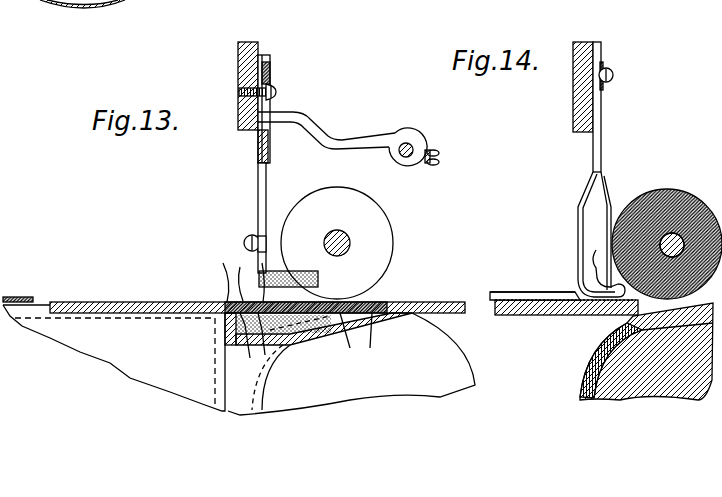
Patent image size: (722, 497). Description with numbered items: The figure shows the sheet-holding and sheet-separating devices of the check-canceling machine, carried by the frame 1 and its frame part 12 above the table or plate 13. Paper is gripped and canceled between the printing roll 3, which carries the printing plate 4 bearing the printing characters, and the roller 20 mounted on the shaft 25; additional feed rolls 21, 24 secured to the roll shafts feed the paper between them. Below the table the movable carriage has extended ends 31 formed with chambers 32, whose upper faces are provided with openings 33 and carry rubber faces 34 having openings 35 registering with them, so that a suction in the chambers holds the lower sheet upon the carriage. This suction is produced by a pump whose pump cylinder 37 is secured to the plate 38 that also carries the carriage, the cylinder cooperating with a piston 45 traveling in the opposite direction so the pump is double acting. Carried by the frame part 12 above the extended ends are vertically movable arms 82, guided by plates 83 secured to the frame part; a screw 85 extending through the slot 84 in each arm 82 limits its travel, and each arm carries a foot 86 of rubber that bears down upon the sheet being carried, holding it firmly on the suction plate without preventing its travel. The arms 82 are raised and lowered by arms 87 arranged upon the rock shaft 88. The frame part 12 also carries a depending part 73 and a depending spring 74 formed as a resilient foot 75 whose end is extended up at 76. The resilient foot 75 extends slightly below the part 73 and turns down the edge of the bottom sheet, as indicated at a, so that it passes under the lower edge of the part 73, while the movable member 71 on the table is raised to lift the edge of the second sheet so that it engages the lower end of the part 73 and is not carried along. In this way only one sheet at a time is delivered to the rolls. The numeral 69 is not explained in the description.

In FIG. 13, the frame part 12 is at (240, 73).
In FIG. 14, the frame part 12 is at (575, 118).
In FIG. 13, the table or plate 13 is at (24, 302).
In FIG. 14, the frame 1 is at (541, 192).
In FIG. 14, the printing roll 3 is at (647, 393).
In FIG. 14, the printing plate 4 is at (628, 327).
In FIG. 14, the roller 20 is at (662, 188).
In FIG. 13, the feed roll 21 is at (455, 358).
In FIG. 13, the feed roll 24 is at (391, 236).
In FIG. 13, the shaft 25 is at (337, 240).
In FIG. 14, the shaft 25 is at (690, 192).
In FIG. 13, the extended end 31 is at (444, 306).
In FIG. 13, the chamber 32 is at (288, 348).
In FIG. 13, the opening 33 is at (302, 344).
In FIG. 13, the rubber face 34 is at (233, 300).
In FIG. 13, the opening 35 is at (398, 294).
In FIG. 13, the pump cylinder 37 is at (152, 368).
In FIG. 13, the plate 38 is at (92, 304).
In FIG. 14, the plate 38 is at (536, 316).
In FIG. 13, the piston 45 is at (86, 5).
In FIG. 13, the member 69 is at (158, 12).
In FIG. 14, the movable member 71 is at (520, 298).
In FIG. 14, the turned-down edge of bottom sheet a is at (540, 293).
In FIG. 14, the depending part 73 is at (603, 190).
In FIG. 14, the depending spring 74 is at (578, 227).
In FIG. 14, the resilient foot 75 is at (592, 318).
In FIG. 14, the extended end of foot 76 is at (601, 257).
In FIG. 13, the vertically movable arm 82 is at (267, 208).
In FIG. 13, the guide plate 83 is at (271, 66).
In FIG. 13, the slot 84 is at (270, 80).
In FIG. 13, the screw 85 is at (239, 92).
In FIG. 13, the foot 86 is at (318, 283).
In FIG. 13, the arm 87 is at (322, 135).
In FIG. 13, the rock shaft 88 is at (406, 143).